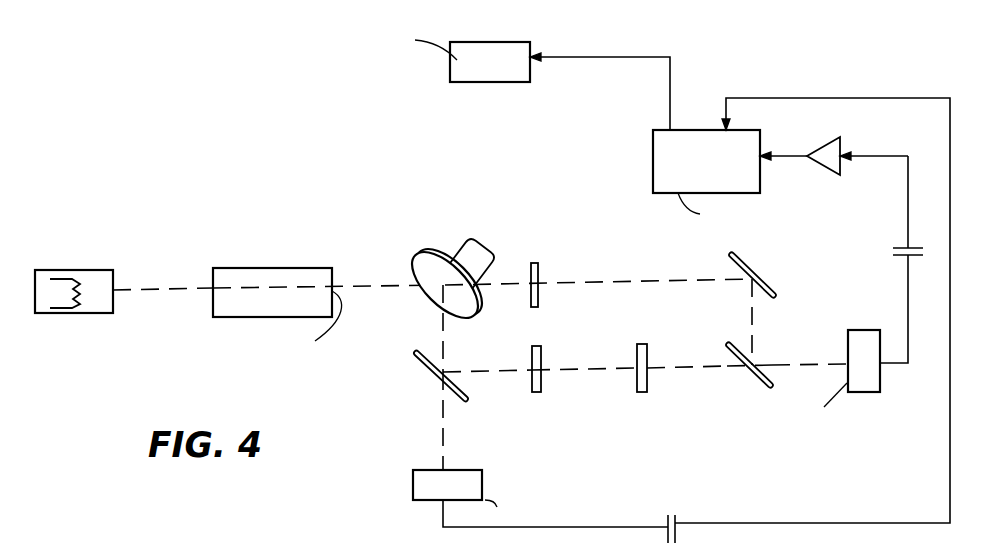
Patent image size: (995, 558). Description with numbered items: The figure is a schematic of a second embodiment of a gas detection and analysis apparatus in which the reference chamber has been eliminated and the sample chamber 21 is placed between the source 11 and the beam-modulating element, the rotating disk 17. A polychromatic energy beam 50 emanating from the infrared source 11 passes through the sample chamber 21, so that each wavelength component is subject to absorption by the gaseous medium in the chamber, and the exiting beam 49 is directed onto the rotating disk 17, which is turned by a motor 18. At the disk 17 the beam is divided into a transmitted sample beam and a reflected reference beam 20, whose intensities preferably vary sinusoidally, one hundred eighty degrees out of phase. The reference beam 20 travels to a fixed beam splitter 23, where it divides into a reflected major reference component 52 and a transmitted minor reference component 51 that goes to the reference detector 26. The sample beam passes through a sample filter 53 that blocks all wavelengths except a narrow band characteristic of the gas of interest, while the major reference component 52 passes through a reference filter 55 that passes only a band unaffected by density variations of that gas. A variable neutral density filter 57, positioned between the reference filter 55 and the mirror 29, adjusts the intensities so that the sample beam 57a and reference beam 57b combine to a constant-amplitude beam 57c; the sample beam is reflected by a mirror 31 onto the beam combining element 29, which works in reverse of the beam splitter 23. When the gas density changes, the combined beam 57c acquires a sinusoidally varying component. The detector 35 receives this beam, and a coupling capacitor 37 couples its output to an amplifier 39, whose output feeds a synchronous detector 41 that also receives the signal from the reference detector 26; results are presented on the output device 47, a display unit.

The source 11 is at (88, 270).
The disk 17 is at (429, 252).
The motor 18 is at (493, 254).
The reference beam 20 is at (440, 318).
The sample chamber 21 is at (290, 268).
The beam splitter 23 is at (430, 352).
The reference detector 26 is at (482, 492).
The beam combining element 29 is at (749, 378).
The mirror 31 is at (773, 290).
The detector 35 is at (865, 393).
The coupling capacitor 37 is at (905, 257).
The amplifier 39 is at (818, 150).
The synchronous detector 41 is at (653, 165).
The output device 47 is at (502, 82).
The exiting beam 49 is at (368, 283).
The polychromatic energy beam 50 is at (140, 292).
The minor reference component 51 is at (445, 455).
The major reference component 52 is at (480, 370).
The sample filter 53 is at (539, 281).
The reference filter 55 is at (542, 366).
The variable neutral density filter 57 is at (648, 363).
The sample beam 57a is at (755, 313).
The reference beam 57b is at (661, 372).
The combined beam 57c is at (827, 366).